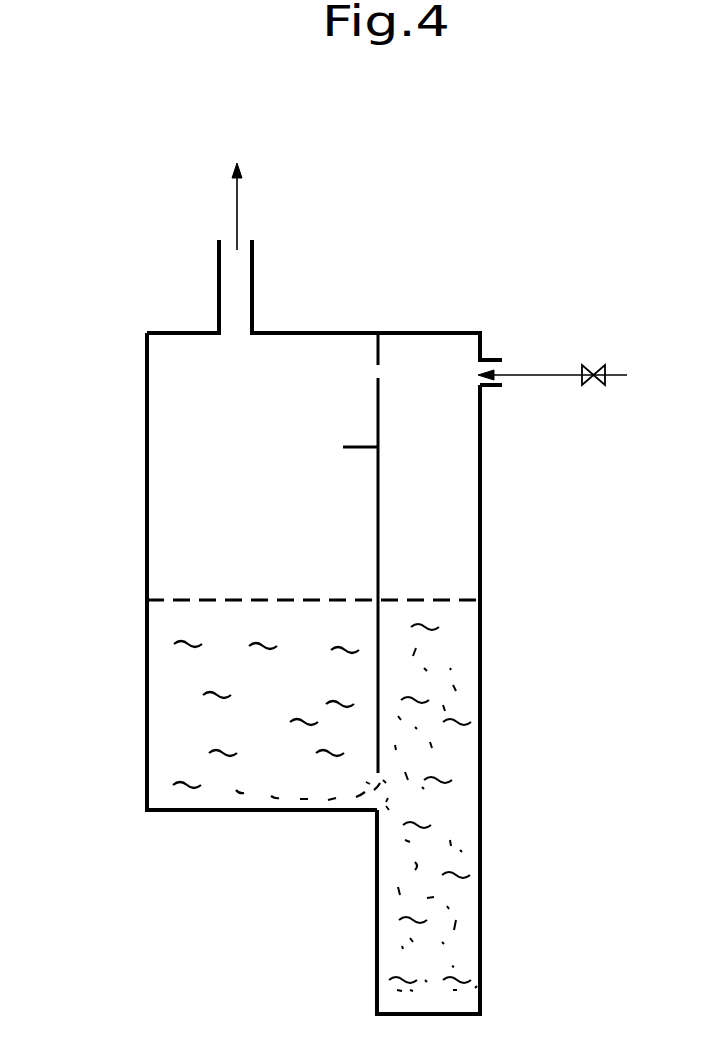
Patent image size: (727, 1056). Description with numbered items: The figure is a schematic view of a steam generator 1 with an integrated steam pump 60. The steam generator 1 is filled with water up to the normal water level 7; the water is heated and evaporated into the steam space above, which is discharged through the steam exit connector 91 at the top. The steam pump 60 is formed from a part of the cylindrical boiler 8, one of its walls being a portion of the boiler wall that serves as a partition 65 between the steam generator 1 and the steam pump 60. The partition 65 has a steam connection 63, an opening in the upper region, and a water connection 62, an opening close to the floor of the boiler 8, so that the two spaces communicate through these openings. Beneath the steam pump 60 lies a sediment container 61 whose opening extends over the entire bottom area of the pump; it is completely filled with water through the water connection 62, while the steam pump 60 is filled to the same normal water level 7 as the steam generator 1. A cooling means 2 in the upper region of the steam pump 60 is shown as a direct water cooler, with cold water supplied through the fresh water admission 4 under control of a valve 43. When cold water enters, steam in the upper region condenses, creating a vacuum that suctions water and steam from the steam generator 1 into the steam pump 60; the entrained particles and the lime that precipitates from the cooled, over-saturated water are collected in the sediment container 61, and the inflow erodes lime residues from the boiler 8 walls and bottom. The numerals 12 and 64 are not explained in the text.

The steam generator 1 is at (173, 745).
The cooling means 2 is at (561, 435).
The fresh water admission 4 is at (500, 368).
The normal water level 7 is at (147, 598).
The boiler 8 is at (147, 498).
The gas space 12 is at (203, 422).
The valve 43 is at (592, 368).
The steam pump 60 is at (458, 529).
The sediment container 61 is at (450, 975).
The water connection 62 is at (387, 793).
The steam connection 63 is at (385, 368).
The column contents 64 is at (422, 863).
The partition 65 is at (343, 445).
The steam exit connector 91 is at (237, 202).